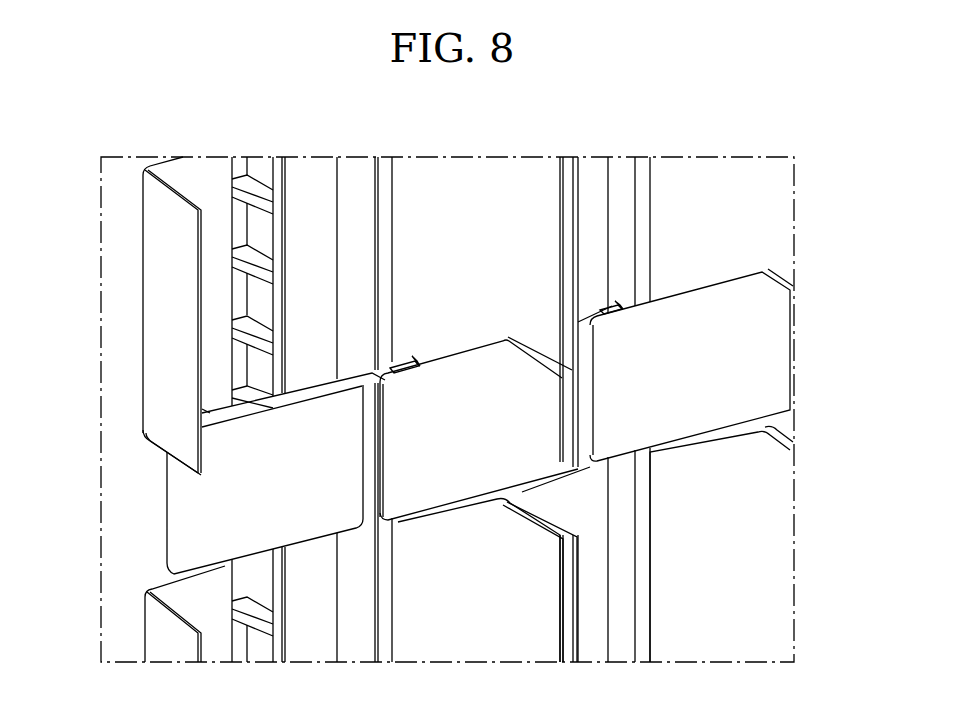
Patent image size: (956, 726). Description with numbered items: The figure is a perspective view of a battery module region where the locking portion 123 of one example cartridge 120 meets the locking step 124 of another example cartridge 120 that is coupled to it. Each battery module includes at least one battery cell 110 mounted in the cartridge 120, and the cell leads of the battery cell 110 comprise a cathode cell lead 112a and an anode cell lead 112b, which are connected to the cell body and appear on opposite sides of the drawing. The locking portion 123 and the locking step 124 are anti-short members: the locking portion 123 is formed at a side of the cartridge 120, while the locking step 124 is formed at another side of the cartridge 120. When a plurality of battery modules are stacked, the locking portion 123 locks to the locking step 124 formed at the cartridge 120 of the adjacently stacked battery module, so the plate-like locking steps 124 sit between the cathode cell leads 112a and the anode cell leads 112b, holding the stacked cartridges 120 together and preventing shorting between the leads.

The battery cell 110 is at (122, 182).
The cathode cell lead 112a is at (204, 182).
The anode cell lead 112b is at (217, 637).
The cartridge 120 is at (311, 182).
The locking portion 123 is at (407, 360).
The locking step 124 is at (177, 512).